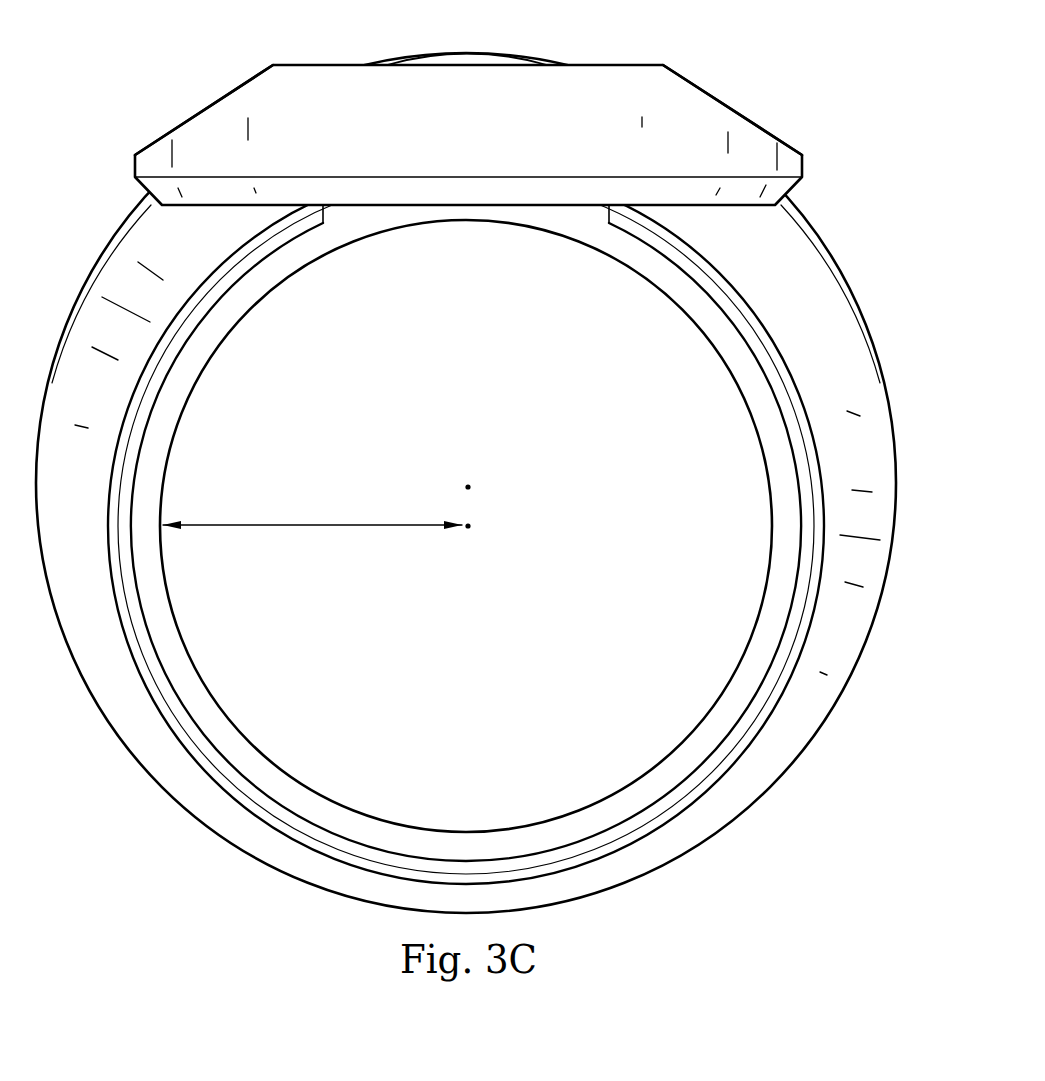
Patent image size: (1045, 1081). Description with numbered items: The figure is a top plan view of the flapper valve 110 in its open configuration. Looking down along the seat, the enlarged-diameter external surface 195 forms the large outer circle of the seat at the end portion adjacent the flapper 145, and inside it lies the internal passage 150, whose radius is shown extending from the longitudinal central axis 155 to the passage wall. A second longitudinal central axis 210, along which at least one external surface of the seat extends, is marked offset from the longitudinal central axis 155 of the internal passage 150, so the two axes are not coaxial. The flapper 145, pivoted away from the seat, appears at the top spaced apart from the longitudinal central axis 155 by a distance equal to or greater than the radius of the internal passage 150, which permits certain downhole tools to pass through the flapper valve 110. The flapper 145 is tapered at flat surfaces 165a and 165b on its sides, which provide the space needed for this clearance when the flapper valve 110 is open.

The flapper valve 110 is at (95, 82).
The flapper 145 is at (338, 82).
The tapered surface 165a is at (207, 107).
The tapered surface 165b is at (733, 108).
The enlarged-diameter external surface 195 is at (840, 703).
The internal passage 150 is at (492, 657).
The longitudinal central axis 155 is at (475, 528).
The longitudinal central axis 210 is at (475, 488).